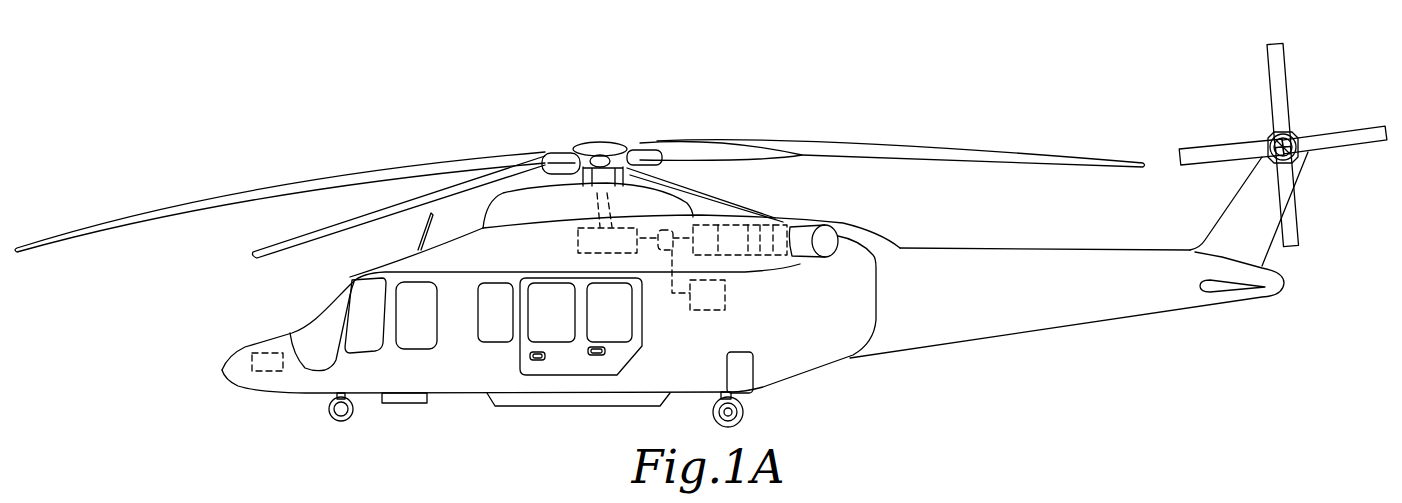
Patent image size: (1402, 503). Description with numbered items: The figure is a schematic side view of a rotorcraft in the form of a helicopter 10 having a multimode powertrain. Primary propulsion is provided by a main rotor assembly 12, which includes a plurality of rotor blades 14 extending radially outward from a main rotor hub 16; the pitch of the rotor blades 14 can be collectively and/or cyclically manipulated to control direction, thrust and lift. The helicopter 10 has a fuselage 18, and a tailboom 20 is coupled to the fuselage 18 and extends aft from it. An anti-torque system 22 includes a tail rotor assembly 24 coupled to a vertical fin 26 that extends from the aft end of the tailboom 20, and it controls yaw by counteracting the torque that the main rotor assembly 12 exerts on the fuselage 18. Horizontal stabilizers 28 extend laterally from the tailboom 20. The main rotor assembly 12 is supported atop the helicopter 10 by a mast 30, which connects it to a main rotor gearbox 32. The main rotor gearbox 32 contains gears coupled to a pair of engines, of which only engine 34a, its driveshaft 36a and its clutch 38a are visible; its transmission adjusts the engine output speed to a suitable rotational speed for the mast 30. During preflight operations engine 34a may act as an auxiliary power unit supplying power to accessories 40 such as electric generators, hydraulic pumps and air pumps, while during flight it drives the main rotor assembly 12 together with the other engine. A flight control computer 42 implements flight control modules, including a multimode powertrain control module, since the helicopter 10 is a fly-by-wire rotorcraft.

The helicopter 10 is at (753, 120).
The main rotor assembly 12 is at (907, 162).
The rotor blades 14 is at (773, 157).
The main rotor hub 16 is at (592, 143).
The fuselage 18 is at (258, 380).
The tailboom 20 is at (922, 343).
The anti-torque system 22 is at (1212, 142).
The tail rotor assembly 24 is at (1352, 145).
The vertical fin 26 is at (1237, 212).
The horizontal stabilizers 28 is at (1223, 288).
The mast 30 is at (617, 173).
The main rotor gearbox 32 is at (578, 240).
The engine 34a is at (760, 254).
The driveshaft 36a is at (650, 232).
The clutch 38a is at (667, 230).
The accessories 40 is at (702, 310).
The flight control computer 42 is at (265, 353).